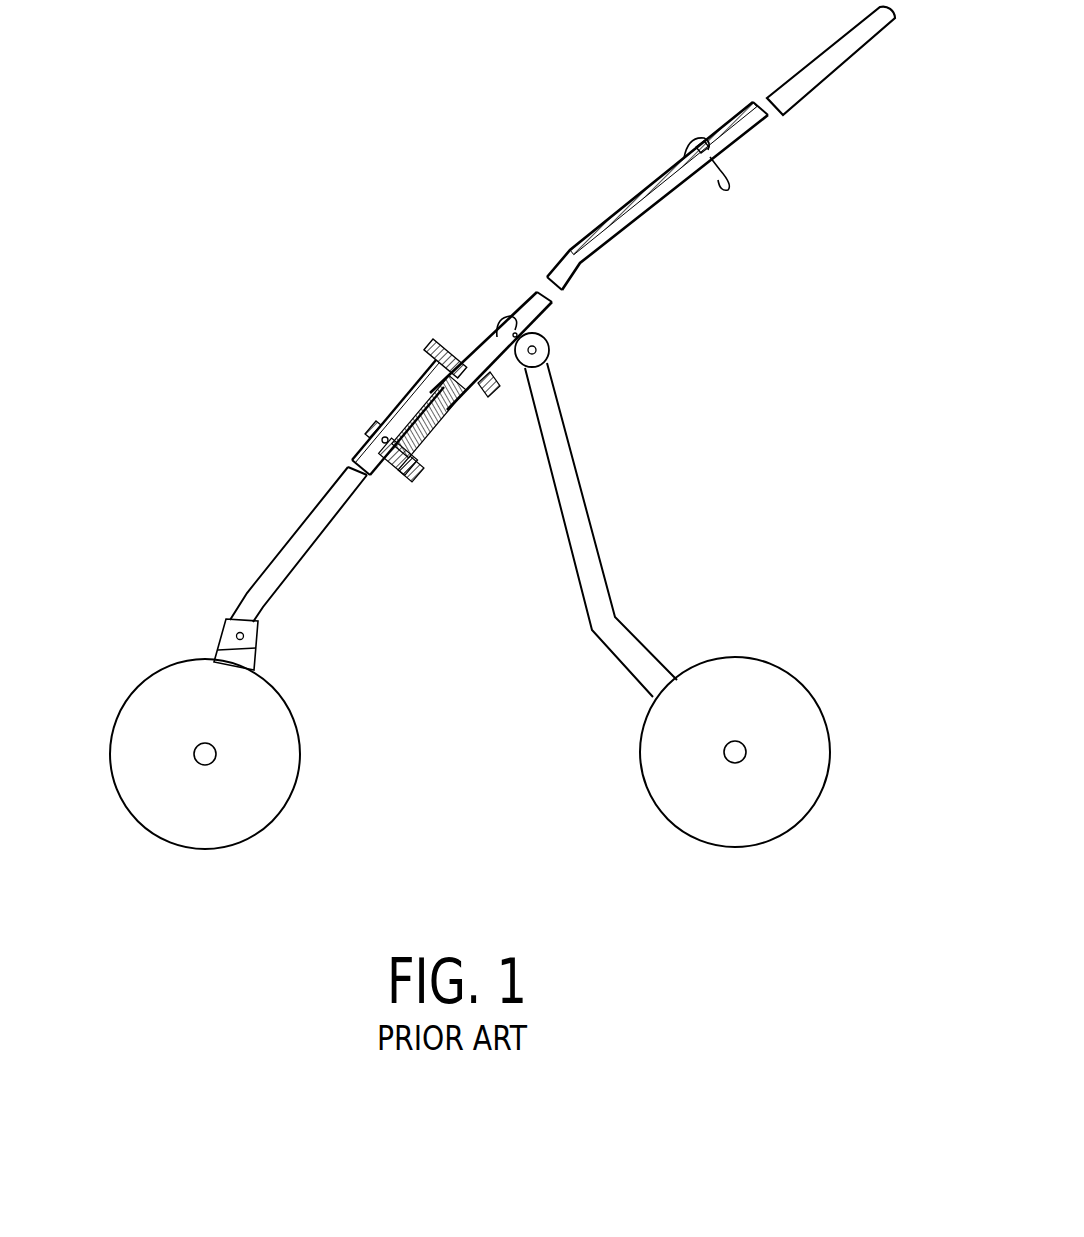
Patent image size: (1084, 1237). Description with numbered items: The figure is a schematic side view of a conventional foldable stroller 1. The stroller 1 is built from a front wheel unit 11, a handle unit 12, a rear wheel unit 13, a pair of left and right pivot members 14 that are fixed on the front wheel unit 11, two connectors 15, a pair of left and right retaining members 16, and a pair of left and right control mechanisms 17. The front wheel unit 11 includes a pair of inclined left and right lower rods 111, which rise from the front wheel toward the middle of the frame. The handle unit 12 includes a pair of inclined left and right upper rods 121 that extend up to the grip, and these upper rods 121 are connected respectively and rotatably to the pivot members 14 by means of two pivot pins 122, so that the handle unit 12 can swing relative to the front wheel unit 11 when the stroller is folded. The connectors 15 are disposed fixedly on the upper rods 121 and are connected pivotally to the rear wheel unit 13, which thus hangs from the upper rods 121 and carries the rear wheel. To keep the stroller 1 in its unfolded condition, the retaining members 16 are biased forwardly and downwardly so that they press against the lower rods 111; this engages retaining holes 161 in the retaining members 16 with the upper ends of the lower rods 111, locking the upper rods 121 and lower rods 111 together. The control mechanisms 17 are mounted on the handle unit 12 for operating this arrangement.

The foldable stroller 1 is at (393, 385).
The front wheel unit 11 is at (280, 760).
The lower rods 111 is at (288, 562).
The handle unit 12 is at (803, 63).
The upper rods 121 is at (648, 215).
The pivot pins 122 is at (396, 478).
The rear wheel unit 13 is at (593, 537).
The pivot members 14 is at (415, 478).
The connectors 15 is at (542, 348).
The retaining members 16 is at (448, 338).
The retaining holes 161 is at (482, 343).
The control mechanisms 17 is at (727, 188).